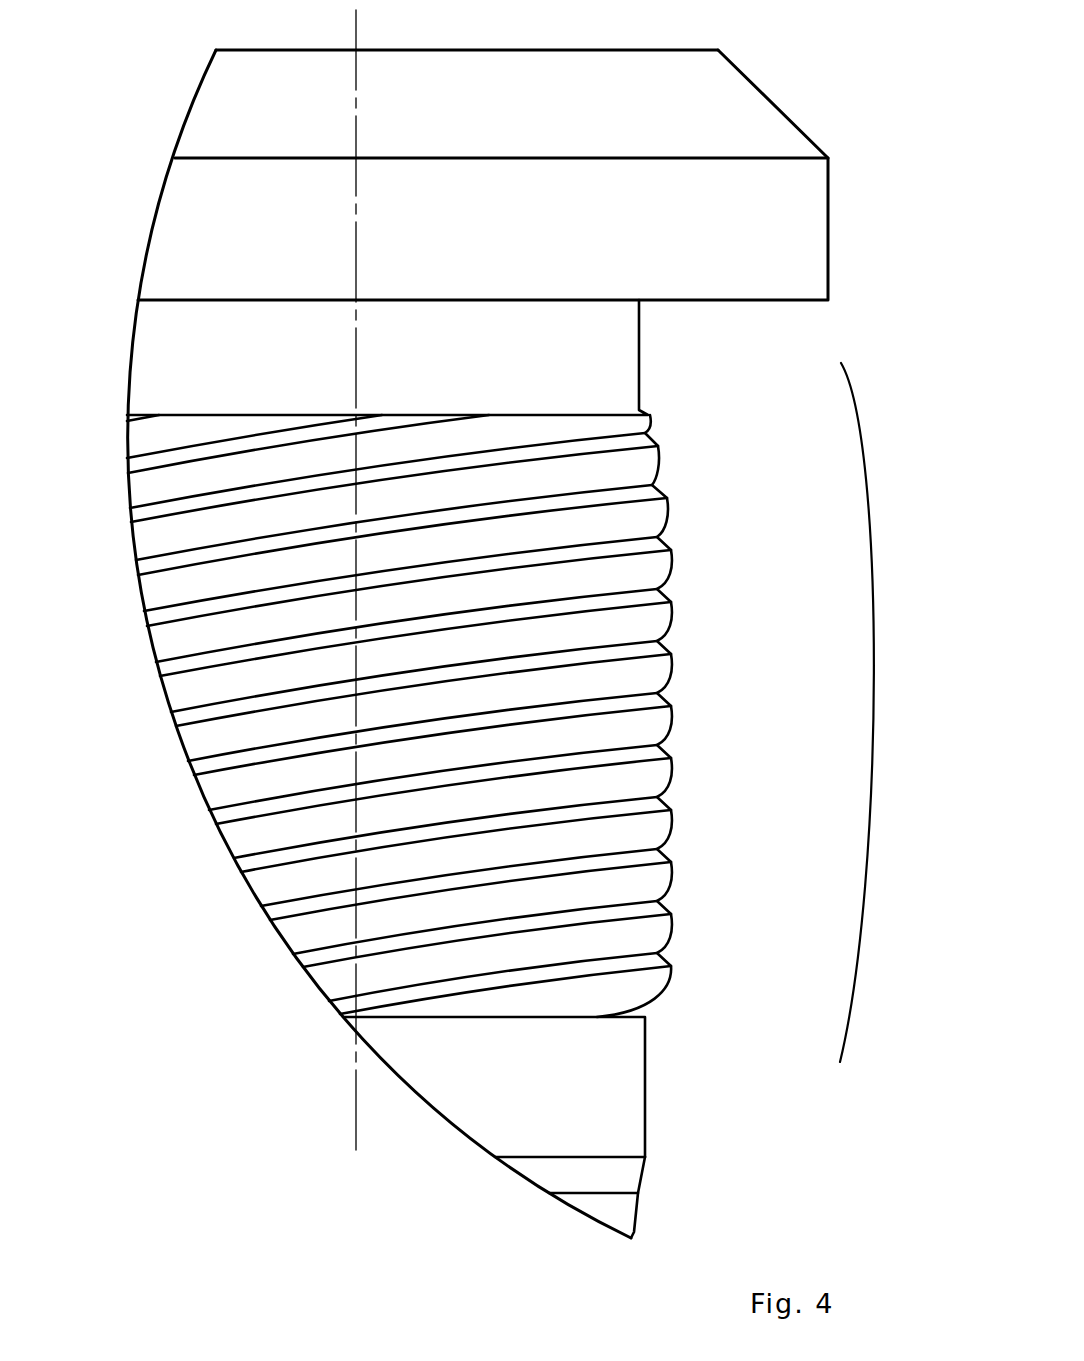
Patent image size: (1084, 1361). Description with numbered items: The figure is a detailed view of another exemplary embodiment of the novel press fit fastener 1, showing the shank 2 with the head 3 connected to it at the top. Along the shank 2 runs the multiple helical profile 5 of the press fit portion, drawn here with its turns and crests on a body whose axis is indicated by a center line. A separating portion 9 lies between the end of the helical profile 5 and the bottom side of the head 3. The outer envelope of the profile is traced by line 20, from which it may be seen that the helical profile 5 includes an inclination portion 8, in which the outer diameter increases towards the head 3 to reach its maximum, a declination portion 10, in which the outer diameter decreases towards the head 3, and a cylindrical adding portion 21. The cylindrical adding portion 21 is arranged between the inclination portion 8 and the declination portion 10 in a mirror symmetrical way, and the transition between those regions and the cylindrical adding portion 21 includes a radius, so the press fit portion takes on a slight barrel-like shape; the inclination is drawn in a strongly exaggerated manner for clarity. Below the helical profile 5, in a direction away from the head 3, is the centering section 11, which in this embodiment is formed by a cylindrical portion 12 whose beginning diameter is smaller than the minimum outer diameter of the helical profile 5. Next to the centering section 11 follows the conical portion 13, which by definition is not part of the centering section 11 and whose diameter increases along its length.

The press fit fastener 1 is at (514, 175).
The shank 2 is at (650, 1100).
The head 3 is at (797, 123).
The helical profile 5 is at (172, 648).
The inclination portion 8 is at (513, 644).
The separating portion 9 is at (130, 352).
The declination portion 10 is at (158, 486).
The centering section 11 is at (645, 1062).
The cylindrical portion 12 is at (375, 1037).
The conical portion 13 is at (640, 1180).
The line 20 is at (852, 403).
The cylindrical adding portion 21 is at (875, 650).